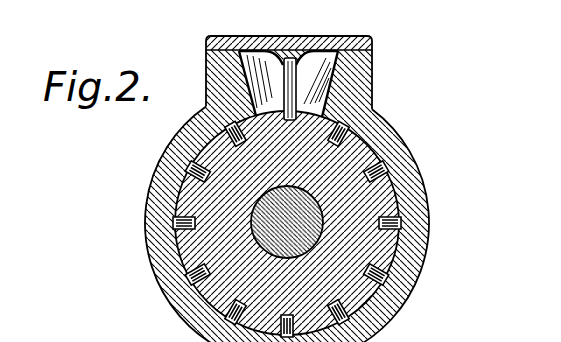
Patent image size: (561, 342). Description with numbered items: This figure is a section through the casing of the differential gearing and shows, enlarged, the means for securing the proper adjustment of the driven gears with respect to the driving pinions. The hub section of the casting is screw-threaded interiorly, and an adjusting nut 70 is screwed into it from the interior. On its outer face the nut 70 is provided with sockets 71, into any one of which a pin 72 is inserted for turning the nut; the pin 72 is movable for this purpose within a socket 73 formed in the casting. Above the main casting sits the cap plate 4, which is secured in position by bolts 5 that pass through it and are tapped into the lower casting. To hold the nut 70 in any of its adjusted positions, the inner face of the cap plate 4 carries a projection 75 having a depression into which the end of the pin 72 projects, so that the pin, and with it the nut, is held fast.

The cap plate 4 is at (305, 40).
The bolts 5 is at (405, 235).
The adjusting nut 70 is at (362, 195).
The sockets 71 is at (382, 157).
The pin 72 is at (284, 80).
The socket 73 is at (305, 63).
The projection 75 is at (281, 48).